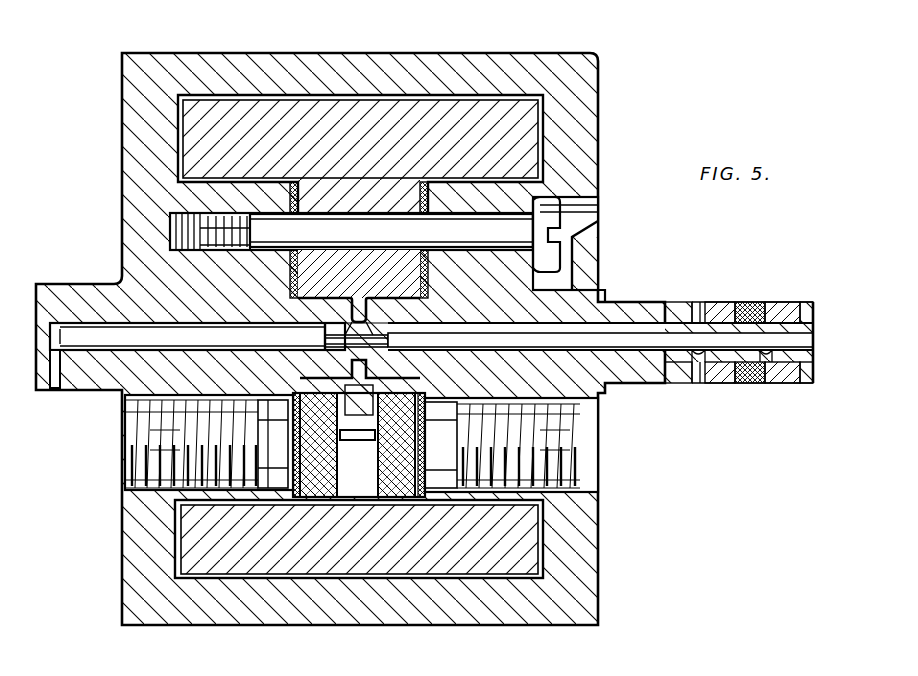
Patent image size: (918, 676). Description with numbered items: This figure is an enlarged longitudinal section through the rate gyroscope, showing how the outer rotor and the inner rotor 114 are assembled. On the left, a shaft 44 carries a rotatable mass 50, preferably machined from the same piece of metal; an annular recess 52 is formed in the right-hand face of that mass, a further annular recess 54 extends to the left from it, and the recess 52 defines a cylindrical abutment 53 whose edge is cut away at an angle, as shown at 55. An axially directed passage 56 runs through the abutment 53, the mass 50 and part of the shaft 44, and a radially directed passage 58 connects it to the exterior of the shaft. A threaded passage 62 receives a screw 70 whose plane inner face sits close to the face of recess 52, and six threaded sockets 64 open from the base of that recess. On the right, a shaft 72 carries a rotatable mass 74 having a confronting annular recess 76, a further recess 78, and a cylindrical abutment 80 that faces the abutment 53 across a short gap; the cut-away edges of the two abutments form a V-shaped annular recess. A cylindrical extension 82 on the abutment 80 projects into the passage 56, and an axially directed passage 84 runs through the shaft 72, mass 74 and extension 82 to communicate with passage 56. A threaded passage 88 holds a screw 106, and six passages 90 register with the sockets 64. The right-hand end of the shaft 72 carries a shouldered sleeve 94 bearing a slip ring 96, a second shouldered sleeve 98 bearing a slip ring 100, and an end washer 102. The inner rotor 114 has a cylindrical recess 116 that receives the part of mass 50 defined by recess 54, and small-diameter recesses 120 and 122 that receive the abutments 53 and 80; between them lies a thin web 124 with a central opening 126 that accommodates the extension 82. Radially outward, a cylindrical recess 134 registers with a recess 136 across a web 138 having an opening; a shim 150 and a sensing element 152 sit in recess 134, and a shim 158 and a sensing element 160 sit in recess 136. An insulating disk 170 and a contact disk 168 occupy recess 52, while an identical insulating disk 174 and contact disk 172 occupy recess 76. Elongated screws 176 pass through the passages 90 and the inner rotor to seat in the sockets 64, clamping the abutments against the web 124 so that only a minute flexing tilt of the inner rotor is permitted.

The rotatable mass 50 is at (120, 65).
The rotatable mass 74 is at (608, 90).
The annular recess 78 is at (540, 140).
The annular recess 54 is at (178, 131).
The cylindrical recess 116 is at (185, 192).
The annular disk of insulating material 170 is at (290, 192).
The annular disk of insulating material 174 is at (428, 282).
The annular contact disk 168 is at (300, 182).
The annular contact disk 172 is at (420, 196).
The cylindrical recess 120 is at (352, 250).
The cylindrical recess 122 is at (398, 262).
The threaded sockets 64 is at (170, 232).
The web 124 is at (340, 296).
The elongated screws 176 is at (545, 224).
The passages 90 is at (518, 258).
The axially directed passage 56 is at (108, 342).
The radially directed passage 58 is at (58, 390).
The shaft 44 is at (50, 284).
The cylindrical extension 82 is at (335, 336).
The axially directed passage 84 is at (640, 340).
The cylindrical abutment 80 is at (372, 335).
The opening 126 is at (385, 350).
The cylindrical abutment 53 is at (322, 320).
The cut-away edge 55 is at (300, 378).
The annular recess 52 is at (318, 98).
The annular recess 76 is at (415, 98).
The inner rotor 114 is at (458, 118).
The shaft 72 is at (632, 302).
The shouldered sleeve of insulation 94 is at (688, 302).
The slip ring 96 is at (720, 302).
The shouldered sleeve of insulation 98 is at (752, 302).
The slip ring 100 is at (788, 302).
The end washer 102 is at (810, 385).
The shim 150 is at (348, 494).
The sensing element 152 is at (318, 494).
The shim 158 is at (362, 440).
The screw 70 is at (148, 447).
The threaded passage 62 is at (122, 490).
The screw 106 is at (580, 440).
The threaded passage 88 is at (600, 490).
The sensing element 160 is at (406, 494).
The cylindrical recess 134 is at (320, 500).
The web 138 is at (358, 500).
The cylindrical recess 136 is at (408, 500).